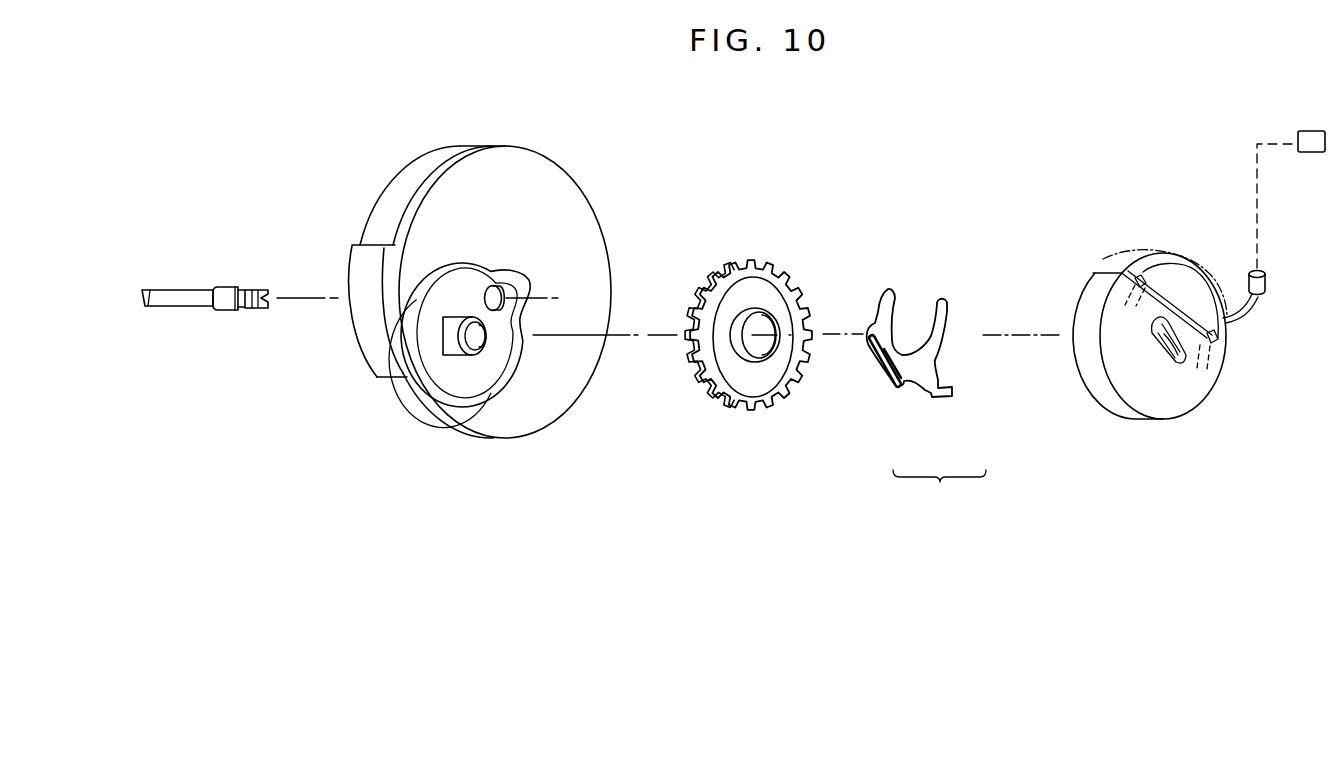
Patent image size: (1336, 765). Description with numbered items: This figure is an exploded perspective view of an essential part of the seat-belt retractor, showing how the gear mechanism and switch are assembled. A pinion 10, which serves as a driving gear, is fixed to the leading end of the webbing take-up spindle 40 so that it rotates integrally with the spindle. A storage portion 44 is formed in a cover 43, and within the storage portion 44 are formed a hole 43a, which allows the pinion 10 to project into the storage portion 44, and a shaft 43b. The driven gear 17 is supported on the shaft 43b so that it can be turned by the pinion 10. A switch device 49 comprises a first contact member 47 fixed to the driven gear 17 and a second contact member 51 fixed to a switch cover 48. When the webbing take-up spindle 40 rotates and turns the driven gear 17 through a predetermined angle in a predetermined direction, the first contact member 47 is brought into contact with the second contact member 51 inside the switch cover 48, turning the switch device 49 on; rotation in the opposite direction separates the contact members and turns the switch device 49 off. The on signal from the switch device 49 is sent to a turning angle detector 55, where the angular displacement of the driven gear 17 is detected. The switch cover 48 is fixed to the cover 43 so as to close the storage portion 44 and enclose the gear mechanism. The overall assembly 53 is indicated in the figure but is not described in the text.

The pinion 10 is at (263, 311).
The webbing take-up spindle 40 is at (177, 308).
The cover 43 is at (518, 179).
The hole 43a is at (490, 287).
The shaft 43b is at (446, 337).
The storage portion 44 is at (480, 367).
The driven gear 17 is at (769, 403).
The first contact member 47 is at (937, 400).
The second contact member 51 is at (1127, 297).
The switch device 49 is at (939, 494).
The switch cover 48 is at (1095, 286).
The winding mechanism 53 is at (472, 523).
The turning angle detector 55 is at (1310, 128).